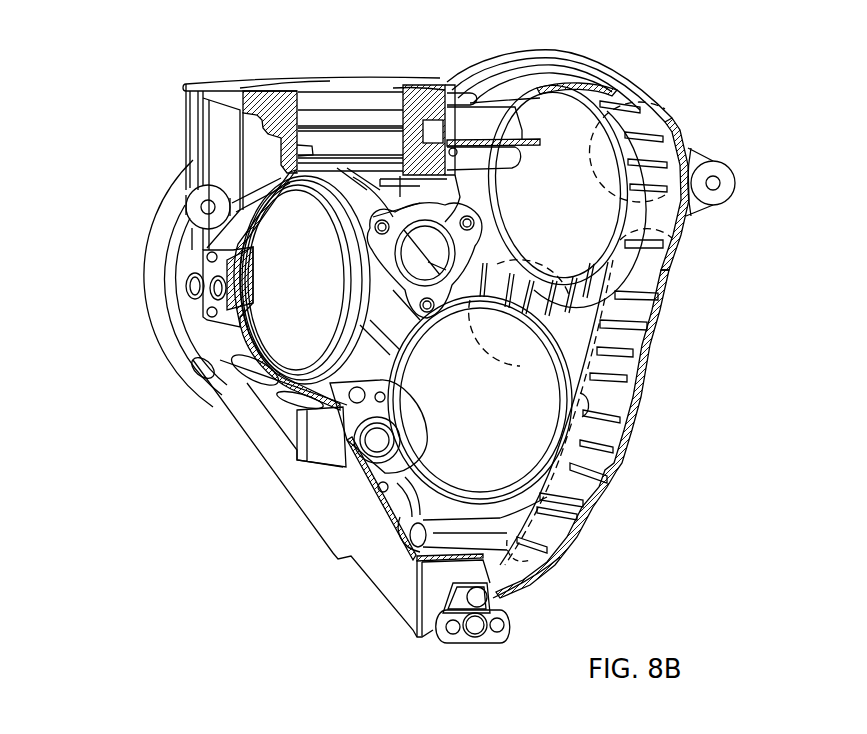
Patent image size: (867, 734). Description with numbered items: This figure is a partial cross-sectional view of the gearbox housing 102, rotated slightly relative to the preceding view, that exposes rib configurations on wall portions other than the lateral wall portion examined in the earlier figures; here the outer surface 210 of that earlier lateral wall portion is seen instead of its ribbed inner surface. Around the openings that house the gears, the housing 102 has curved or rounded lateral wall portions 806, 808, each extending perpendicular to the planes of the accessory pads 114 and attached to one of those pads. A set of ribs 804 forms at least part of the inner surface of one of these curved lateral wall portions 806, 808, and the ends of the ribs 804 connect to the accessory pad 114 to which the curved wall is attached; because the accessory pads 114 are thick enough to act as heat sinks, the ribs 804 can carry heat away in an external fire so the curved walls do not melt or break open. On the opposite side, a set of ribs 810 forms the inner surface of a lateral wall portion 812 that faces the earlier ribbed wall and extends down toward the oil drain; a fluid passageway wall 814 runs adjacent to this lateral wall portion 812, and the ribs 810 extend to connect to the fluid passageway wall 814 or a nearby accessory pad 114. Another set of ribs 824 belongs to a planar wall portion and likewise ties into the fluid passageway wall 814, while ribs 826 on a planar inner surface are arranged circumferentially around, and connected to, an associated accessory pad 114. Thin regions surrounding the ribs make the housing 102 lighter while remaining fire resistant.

The gearbox housing 102 is at (500, 93).
The accessory pads 114 is at (535, 52).
The outer surface 210 is at (363, 543).
The ribs 804 is at (668, 110).
The curved lateral wall portion 806 is at (192, 315).
The curved lateral wall portion 808 is at (576, 88).
The ribs 810 is at (641, 388).
The lateral wall portion 812 is at (627, 460).
The fluid passageway wall 814 is at (600, 310).
The ribs 824 is at (582, 262).
The ribs 826 is at (516, 263).